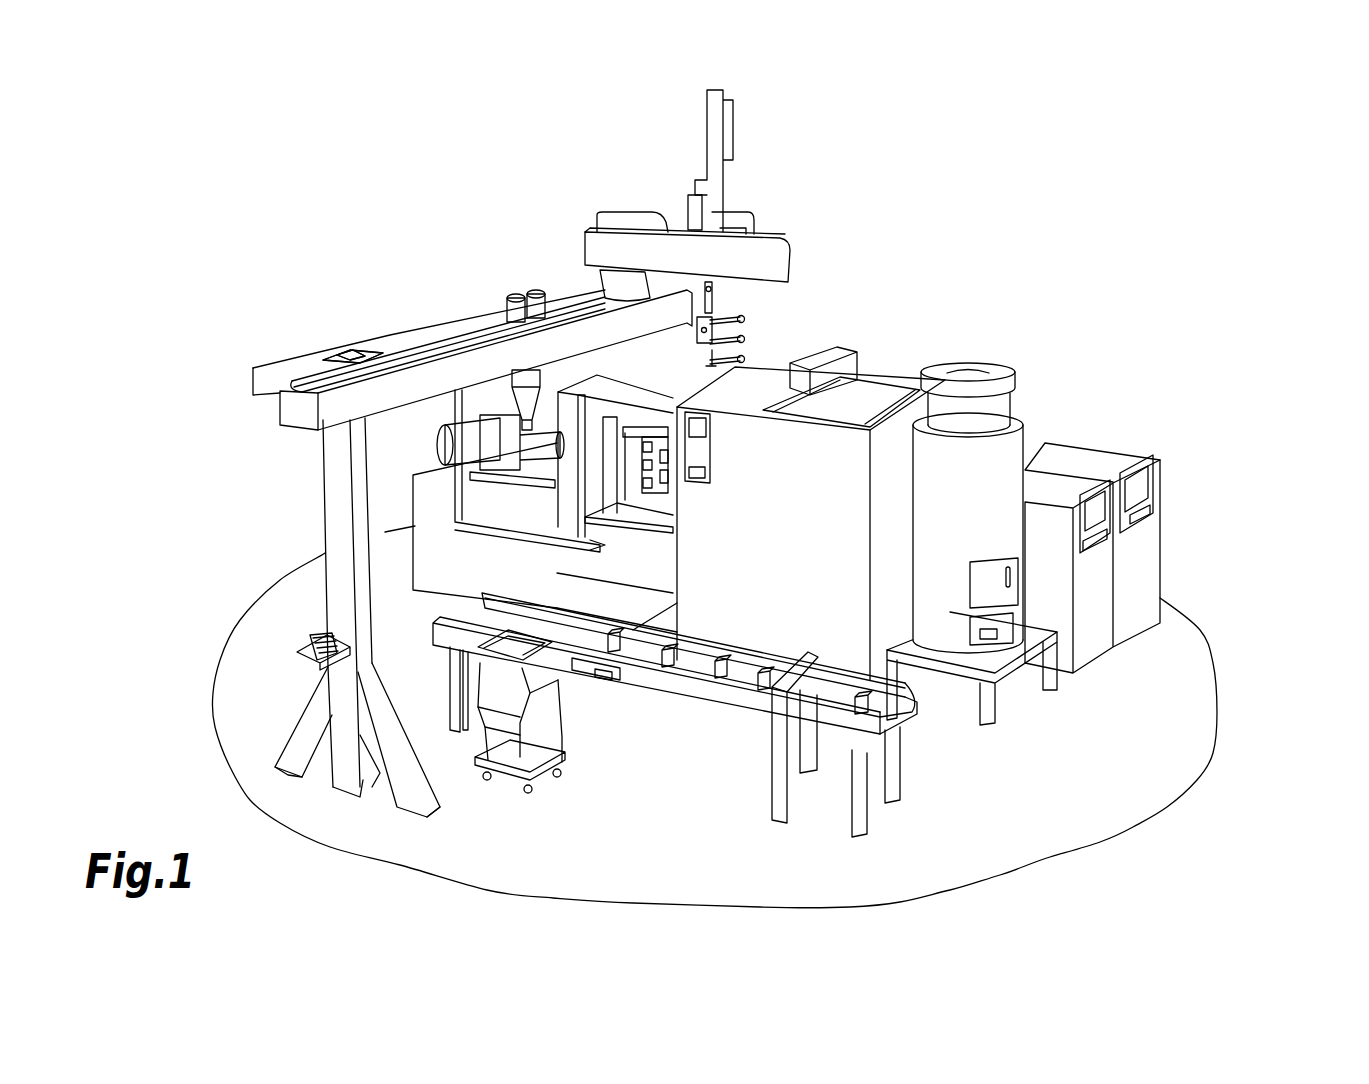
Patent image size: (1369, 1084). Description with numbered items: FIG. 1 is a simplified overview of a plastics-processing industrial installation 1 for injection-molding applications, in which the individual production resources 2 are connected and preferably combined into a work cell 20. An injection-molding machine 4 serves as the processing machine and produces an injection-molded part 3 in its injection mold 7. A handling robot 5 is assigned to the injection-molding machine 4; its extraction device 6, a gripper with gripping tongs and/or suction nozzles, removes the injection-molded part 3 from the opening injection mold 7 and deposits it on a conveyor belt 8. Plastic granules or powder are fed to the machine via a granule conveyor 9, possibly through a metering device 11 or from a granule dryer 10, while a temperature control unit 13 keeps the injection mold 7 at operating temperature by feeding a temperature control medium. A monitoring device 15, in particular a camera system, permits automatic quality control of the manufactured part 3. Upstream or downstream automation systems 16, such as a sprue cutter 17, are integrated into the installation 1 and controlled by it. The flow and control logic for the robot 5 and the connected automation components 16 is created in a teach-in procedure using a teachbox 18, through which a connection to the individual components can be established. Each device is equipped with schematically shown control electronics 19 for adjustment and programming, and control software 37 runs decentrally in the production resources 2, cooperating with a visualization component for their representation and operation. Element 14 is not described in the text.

The industrial installation 1 is at (250, 253).
The production resources 2 is at (1060, 250).
The injection-molded part 3 is at (668, 670).
The injection-molding machine 4 is at (843, 402).
The robot 5 is at (678, 258).
The extraction device 6 is at (740, 340).
The injection mold 7 is at (655, 478).
The conveyor belt 8 is at (740, 676).
The granule conveyor 9 is at (505, 298).
The granule dryer 10 is at (1000, 470).
The metering device 11 is at (525, 408).
The temperature control unit 13 is at (1035, 478).
The hopper 14 is at (845, 363).
The monitoring device 15 is at (800, 690).
The automation systems 16 is at (432, 497).
The sprue cutter 17 is at (598, 546).
The teachbox 18 is at (310, 648).
The control electronics 19 is at (366, 333).
The work cell 20 is at (240, 508).
The control software 37 is at (345, 330).